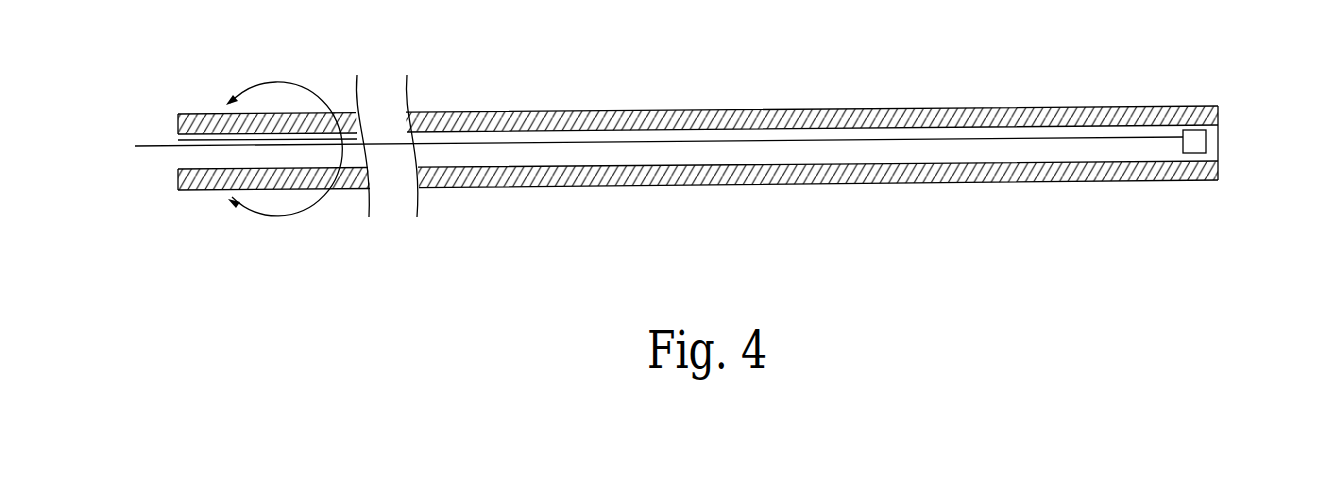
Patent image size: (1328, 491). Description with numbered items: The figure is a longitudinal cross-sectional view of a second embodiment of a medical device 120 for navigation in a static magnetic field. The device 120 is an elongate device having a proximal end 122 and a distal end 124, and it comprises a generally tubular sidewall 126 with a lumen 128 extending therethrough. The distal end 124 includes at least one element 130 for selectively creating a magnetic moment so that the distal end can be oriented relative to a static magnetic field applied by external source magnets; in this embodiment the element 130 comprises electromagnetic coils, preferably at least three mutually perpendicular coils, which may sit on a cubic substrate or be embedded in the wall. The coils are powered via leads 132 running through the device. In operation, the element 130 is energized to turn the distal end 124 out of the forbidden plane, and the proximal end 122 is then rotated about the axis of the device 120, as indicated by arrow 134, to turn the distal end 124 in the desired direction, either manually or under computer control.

The medical device 120 is at (822, 266).
The proximal end 122 is at (159, 203).
The distal end 124 is at (1232, 112).
The tubular sidewall 126 is at (820, 108).
The lumen 128 is at (880, 153).
The element for selectively creating a magnetic moment 130 is at (1195, 147).
The leads 132 is at (982, 137).
The arrow 134 is at (292, 86).